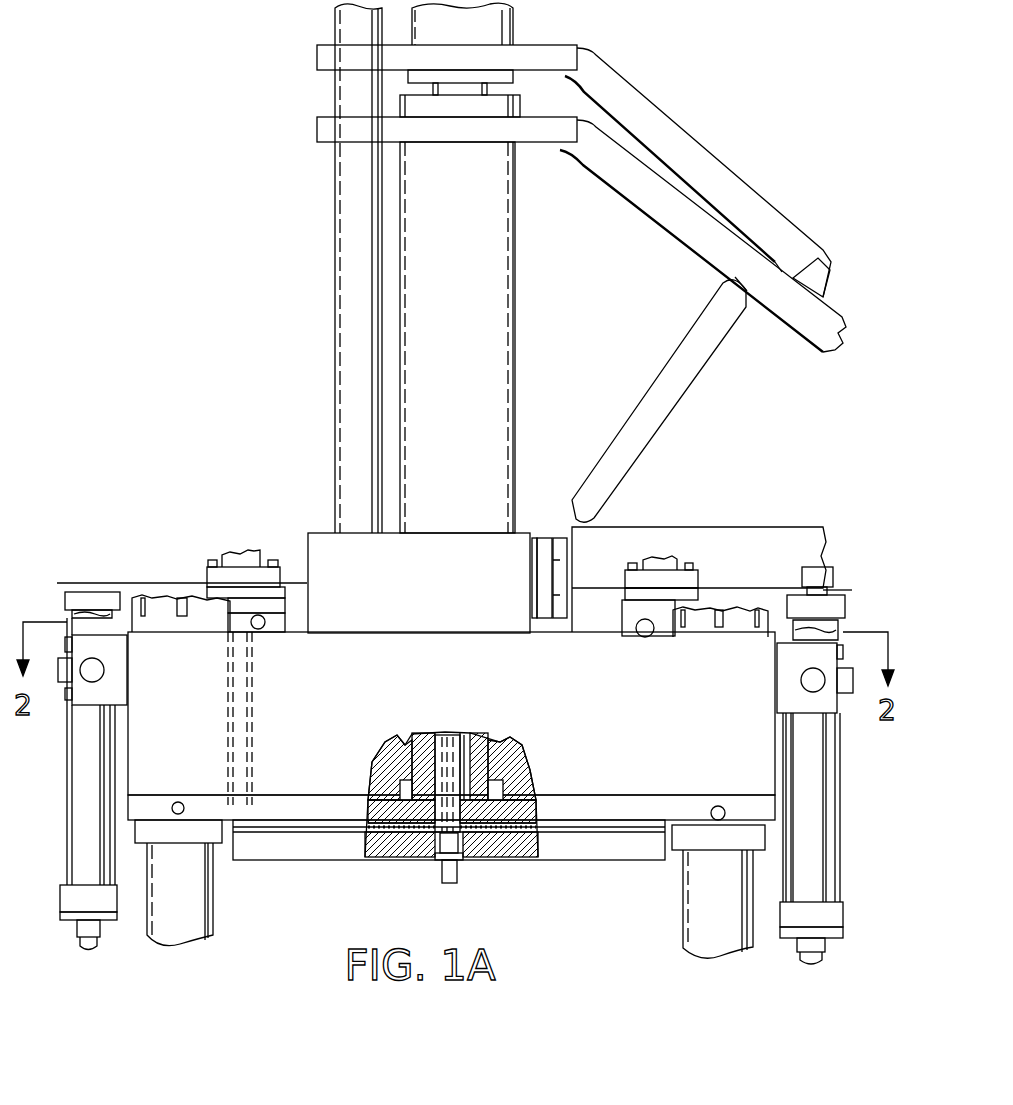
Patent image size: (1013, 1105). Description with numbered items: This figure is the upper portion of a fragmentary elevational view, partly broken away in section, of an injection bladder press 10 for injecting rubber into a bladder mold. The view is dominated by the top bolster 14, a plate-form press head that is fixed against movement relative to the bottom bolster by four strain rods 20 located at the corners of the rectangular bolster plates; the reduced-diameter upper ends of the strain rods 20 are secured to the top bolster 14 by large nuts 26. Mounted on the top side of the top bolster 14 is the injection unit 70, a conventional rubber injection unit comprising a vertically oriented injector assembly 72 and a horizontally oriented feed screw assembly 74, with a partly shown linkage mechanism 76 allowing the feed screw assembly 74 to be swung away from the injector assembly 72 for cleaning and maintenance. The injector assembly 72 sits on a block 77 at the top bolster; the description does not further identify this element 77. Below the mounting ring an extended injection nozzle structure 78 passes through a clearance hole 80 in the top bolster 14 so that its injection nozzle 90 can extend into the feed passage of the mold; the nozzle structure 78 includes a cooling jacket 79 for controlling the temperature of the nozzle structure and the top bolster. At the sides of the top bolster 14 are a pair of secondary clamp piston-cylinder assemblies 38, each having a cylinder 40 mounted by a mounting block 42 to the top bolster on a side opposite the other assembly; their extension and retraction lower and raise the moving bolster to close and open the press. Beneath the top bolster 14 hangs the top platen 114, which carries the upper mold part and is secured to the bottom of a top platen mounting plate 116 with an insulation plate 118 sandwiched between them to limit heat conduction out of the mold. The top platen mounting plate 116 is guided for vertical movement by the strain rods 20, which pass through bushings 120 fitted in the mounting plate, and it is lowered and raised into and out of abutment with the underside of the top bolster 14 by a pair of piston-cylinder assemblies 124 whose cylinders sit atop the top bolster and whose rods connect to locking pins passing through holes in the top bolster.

The injection bladder press 10 is at (250, 323).
The top bolster 14 is at (779, 793).
The strain rods 20 is at (212, 930).
The large nuts 26 is at (132, 605).
The secondary clamp piston-cylinder assemblies 38 is at (64, 924).
The cylinder 40 is at (113, 868).
The mounting block 42 is at (85, 706).
The injection unit 70 is at (323, 227).
The injector assembly 72 is at (518, 340).
The feed screw assembly 74 is at (740, 527).
The linkage mechanism 76 is at (673, 108).
The carriage block 77 is at (308, 548).
The injection nozzle structure 78 is at (497, 745).
The cooling jacket 79 is at (425, 735).
The clearance hole 80 is at (395, 738).
The injection nozzle 90 is at (447, 888).
The top platen 114 is at (310, 858).
The top platen mounting plate 116 is at (577, 828).
The insulation plate 118 is at (603, 836).
The bushings 120 is at (220, 845).
The piston-cylinder assemblies 124 is at (222, 555).